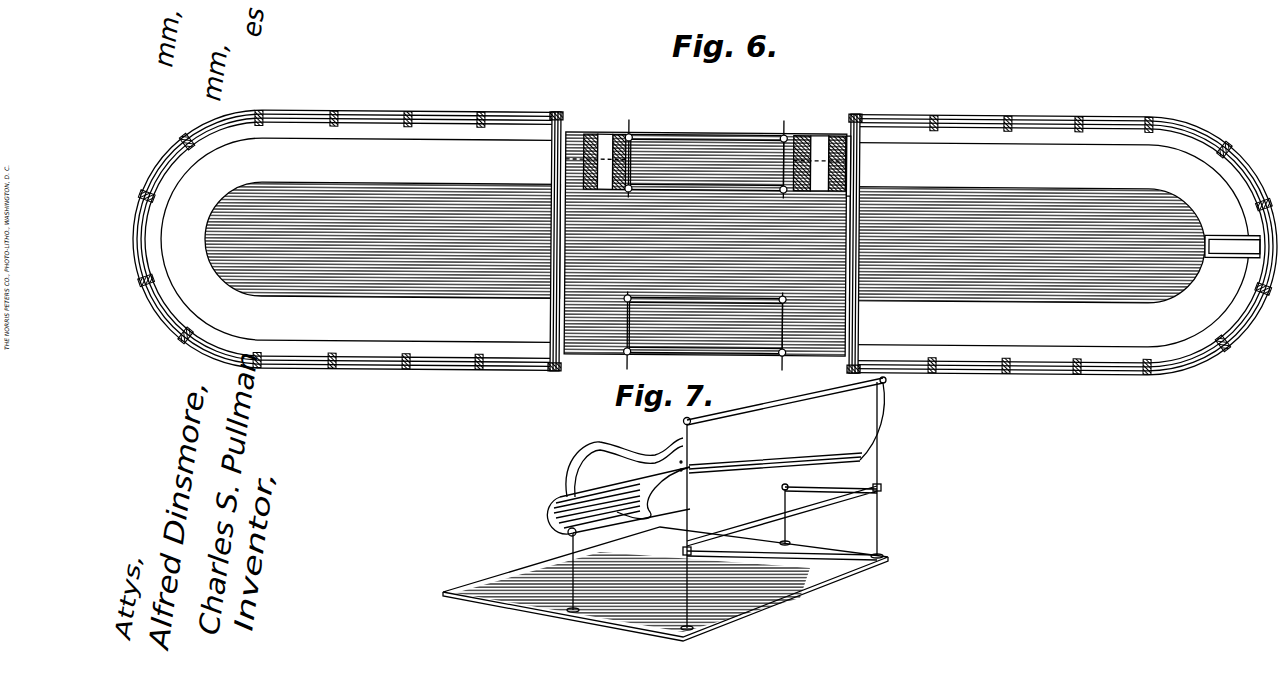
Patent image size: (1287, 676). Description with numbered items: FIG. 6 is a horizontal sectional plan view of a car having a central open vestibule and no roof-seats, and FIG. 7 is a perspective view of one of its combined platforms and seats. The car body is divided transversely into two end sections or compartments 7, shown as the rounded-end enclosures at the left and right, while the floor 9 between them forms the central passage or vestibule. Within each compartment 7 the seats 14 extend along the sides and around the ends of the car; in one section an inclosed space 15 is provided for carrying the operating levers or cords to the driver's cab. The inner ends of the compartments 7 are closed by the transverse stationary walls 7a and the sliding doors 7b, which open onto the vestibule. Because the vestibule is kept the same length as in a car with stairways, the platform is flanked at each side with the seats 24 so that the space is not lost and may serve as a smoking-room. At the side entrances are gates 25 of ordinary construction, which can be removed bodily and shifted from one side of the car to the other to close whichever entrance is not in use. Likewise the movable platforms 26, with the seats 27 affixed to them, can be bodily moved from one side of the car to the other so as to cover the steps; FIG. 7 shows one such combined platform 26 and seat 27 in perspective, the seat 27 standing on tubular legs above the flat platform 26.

In FIG. 6, the end section or compartment 7 is at (705, 243).
In FIG. 6, the transverse stationary wall 7a is at (864, 178).
In FIG. 6, the sliding door 7b is at (549, 243).
In FIG. 6, the floor 9 is at (705, 244).
In FIG. 6, the seat 14 is at (705, 242).
In FIG. 6, the inclosed space 15 is at (1232, 246).
In FIG. 6, the seat 24 is at (706, 243).
In FIG. 6, the gate 25 is at (599, 137).
In FIG. 6, the movable platform 26 is at (573, 133).
In FIG. 7, the movable platform 26 is at (665, 584).
In FIG. 6, the seat 27 is at (629, 125).
In FIG. 7, the seat 27 is at (716, 503).